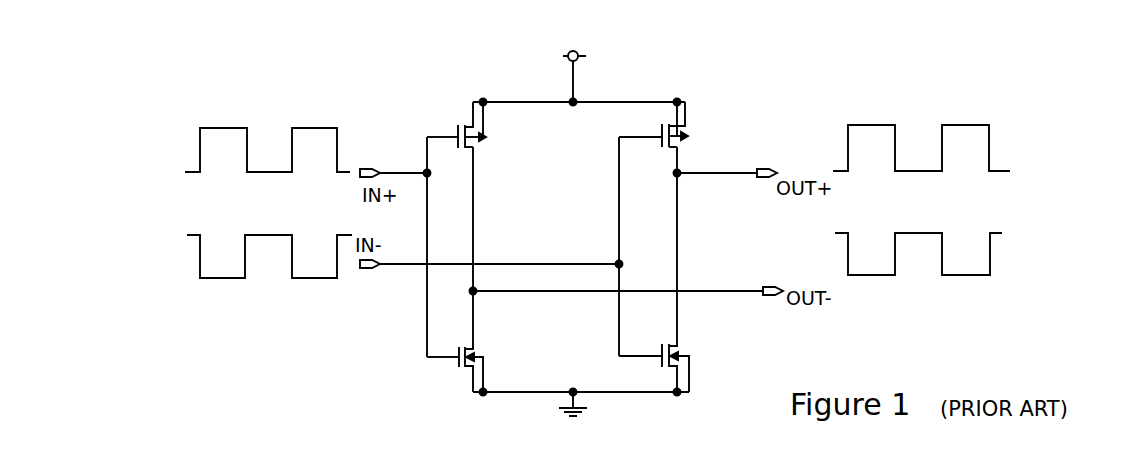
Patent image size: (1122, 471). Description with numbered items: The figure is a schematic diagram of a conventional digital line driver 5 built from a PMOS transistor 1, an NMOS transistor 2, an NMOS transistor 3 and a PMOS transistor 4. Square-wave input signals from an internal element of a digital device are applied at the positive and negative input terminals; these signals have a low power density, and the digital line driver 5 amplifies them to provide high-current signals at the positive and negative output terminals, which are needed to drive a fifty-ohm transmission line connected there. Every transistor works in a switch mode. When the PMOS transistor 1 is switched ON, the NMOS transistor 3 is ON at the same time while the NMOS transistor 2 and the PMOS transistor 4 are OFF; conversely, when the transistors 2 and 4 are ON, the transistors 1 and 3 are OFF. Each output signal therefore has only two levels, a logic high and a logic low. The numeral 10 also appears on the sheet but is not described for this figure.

The PMOS transistor 1 is at (486, 146).
The NMOS transistor 2 is at (486, 352).
The NMOS transistor 3 is at (690, 352).
The PMOS transistor 4 is at (690, 140).
The digital line driver 5 is at (733, 93).
The differential amplifier circuit 10 is at (683, 470).